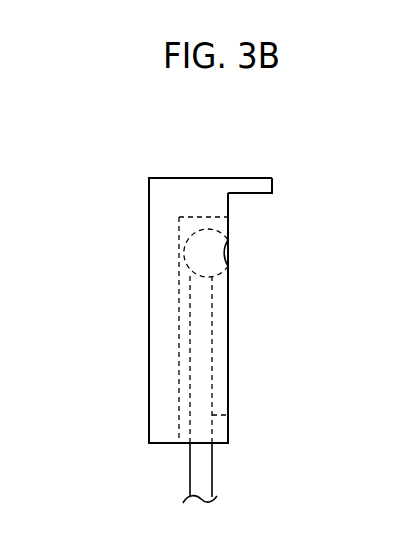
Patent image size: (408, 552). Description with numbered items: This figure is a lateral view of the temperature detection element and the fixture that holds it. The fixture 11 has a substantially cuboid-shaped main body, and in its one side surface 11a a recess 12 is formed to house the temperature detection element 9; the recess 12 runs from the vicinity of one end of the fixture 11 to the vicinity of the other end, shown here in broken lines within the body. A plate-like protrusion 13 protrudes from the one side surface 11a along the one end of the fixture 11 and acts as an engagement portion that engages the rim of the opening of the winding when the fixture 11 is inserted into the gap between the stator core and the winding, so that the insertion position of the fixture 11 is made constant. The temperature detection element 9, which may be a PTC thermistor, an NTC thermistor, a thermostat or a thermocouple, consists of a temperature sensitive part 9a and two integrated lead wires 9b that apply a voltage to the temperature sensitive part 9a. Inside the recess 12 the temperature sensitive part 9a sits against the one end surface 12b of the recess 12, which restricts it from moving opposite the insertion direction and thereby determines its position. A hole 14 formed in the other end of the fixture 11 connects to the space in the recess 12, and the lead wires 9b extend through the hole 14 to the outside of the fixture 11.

The fixture 11 is at (145, 325).
The one side surface 11a is at (228, 313).
The protrusion 13 is at (253, 185).
The recess 12 is at (220, 348).
The one end surface of the recess 12b is at (228, 232).
The temperature detection element 9 is at (212, 377).
The temperature sensitive part 9a is at (232, 250).
The lead wires 9b is at (203, 476).
The hole 14 is at (180, 452).